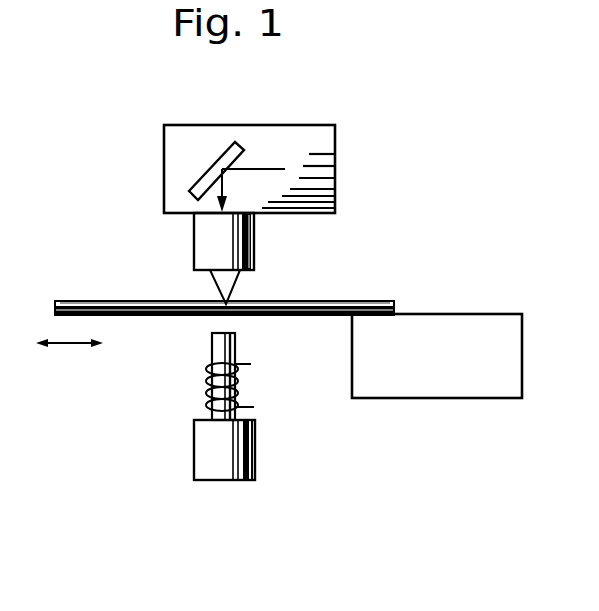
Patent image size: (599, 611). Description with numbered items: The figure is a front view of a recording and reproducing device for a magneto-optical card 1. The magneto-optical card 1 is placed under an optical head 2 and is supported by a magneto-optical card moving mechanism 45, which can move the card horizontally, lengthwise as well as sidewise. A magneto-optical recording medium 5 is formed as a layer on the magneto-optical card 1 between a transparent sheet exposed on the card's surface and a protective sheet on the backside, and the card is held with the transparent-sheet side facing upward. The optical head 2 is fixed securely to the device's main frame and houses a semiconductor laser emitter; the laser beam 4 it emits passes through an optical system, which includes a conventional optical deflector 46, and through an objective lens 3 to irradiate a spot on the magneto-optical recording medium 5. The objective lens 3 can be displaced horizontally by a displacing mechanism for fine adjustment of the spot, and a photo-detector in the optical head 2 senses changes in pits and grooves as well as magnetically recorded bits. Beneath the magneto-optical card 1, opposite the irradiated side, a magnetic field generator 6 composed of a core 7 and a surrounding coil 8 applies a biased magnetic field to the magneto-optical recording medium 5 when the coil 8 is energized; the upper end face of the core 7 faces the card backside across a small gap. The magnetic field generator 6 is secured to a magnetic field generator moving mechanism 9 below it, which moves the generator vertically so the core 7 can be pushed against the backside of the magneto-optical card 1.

The magneto-optical card 1 is at (352, 296).
The optical head 2 is at (315, 120).
The objective lens 3 is at (206, 231).
The laser beam 4 is at (233, 288).
The magneto-optical recording medium 5 is at (275, 305).
The magnetic field generator 6 is at (196, 378).
The core 7 is at (231, 351).
The coil 8 is at (238, 391).
The magnetic field generator moving mechanism 9 is at (254, 445).
The magneto-optical card moving mechanism 45 is at (410, 398).
The optical deflector 46 is at (194, 183).